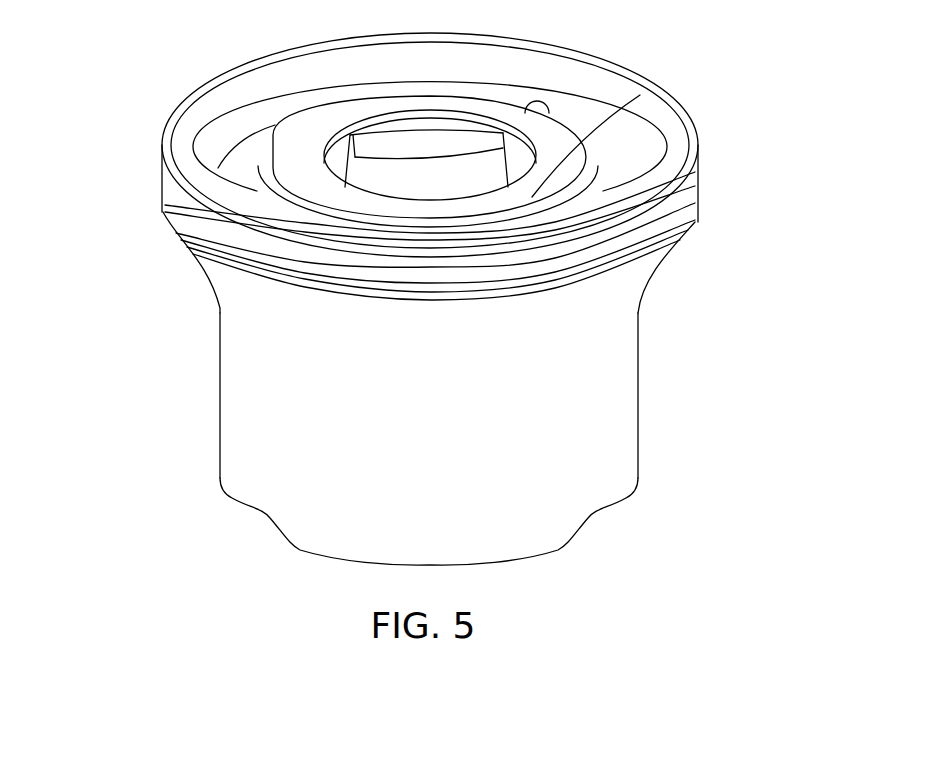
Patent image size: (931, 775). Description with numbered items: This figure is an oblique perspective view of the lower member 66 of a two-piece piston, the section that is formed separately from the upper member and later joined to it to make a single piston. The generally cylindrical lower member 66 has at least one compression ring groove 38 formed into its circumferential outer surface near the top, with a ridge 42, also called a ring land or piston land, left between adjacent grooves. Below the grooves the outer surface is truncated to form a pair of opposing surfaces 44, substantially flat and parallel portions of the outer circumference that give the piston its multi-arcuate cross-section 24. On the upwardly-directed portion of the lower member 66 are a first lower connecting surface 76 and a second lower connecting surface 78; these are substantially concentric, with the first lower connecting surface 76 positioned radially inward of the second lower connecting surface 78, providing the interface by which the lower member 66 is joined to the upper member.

The multi-arcuate cross-section 24 is at (123, 182).
The compression ring groove 38 is at (185, 208).
The ridge 42 is at (698, 152).
The opposing surface 44 is at (220, 443).
The lower member 66 is at (710, 338).
The first lower connecting surface 76 is at (442, 97).
The second lower connecting surface 78 is at (667, 112).